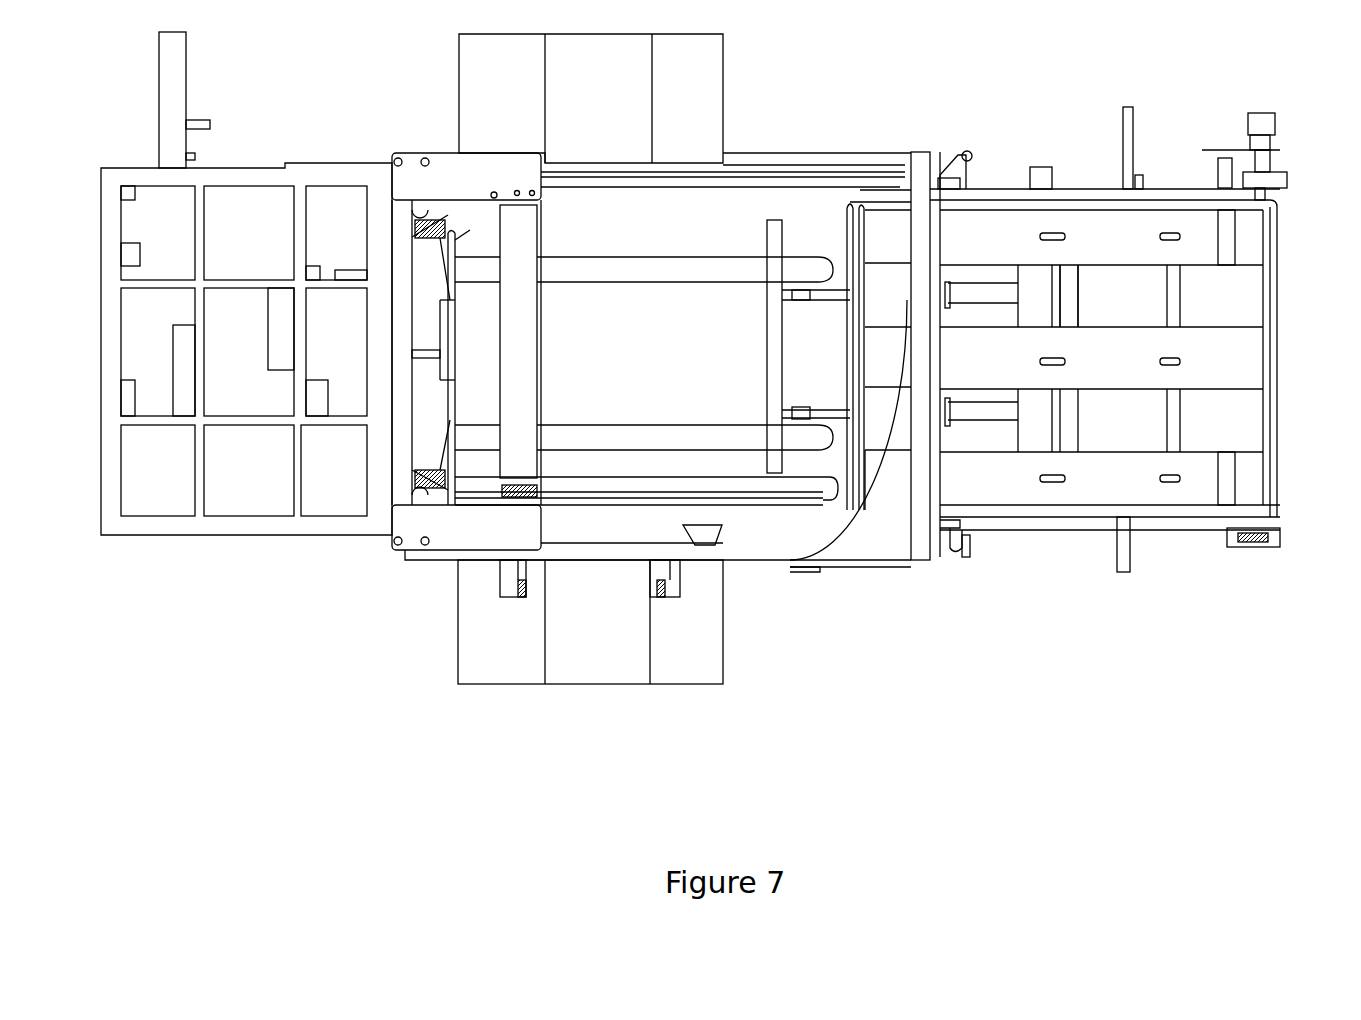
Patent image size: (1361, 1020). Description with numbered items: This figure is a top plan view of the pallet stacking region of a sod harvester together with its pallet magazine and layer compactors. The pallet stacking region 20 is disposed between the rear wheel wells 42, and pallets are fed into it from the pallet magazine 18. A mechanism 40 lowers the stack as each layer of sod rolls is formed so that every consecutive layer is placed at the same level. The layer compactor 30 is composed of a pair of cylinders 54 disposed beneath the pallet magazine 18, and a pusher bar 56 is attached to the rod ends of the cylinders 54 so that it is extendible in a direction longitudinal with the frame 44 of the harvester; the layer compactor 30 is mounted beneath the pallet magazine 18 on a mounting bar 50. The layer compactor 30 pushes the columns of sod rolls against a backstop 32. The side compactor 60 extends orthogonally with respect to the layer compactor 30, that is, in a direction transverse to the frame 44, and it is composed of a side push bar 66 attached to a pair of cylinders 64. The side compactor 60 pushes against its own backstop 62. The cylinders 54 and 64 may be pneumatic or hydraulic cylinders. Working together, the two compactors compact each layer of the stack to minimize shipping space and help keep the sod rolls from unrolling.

The pallet magazine 18 is at (1200, 310).
The sod stacking region 20 is at (805, 215).
The layer compactor 30 is at (762, 315).
The backstop 32 is at (540, 380).
The mechanism 40 is at (445, 425).
The rear wheel wells 42 is at (492, 107).
The frame 44 is at (885, 542).
The mounting bar 50 is at (1072, 300).
The cylinders 54 is at (985, 290).
The pusher bar 56 is at (778, 375).
The side compactor 60 is at (612, 475).
The backstop 62 is at (655, 190).
The cylinders 64 is at (672, 577).
The side push bar 66 is at (780, 503).